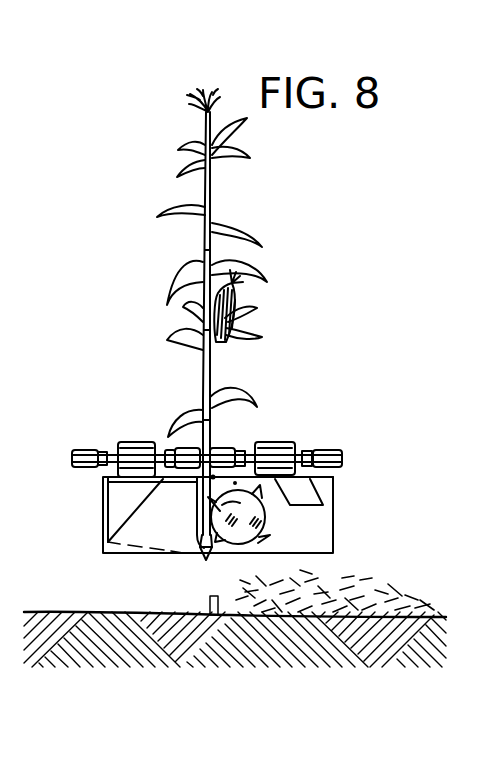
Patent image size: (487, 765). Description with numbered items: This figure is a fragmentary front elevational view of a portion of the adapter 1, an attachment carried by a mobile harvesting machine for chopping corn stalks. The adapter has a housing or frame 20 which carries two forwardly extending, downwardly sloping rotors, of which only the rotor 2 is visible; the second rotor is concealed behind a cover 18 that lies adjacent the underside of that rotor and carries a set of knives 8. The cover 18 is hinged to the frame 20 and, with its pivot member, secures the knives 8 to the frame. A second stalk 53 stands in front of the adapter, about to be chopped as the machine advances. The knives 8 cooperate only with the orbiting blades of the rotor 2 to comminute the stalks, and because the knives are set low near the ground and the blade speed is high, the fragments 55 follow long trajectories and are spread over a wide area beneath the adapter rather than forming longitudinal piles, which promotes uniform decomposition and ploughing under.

The adapter 1 is at (84, 512).
The rotor 2 is at (277, 525).
The knives 8 is at (206, 540).
The cover 18 is at (175, 533).
The housing or frame 20 is at (335, 490).
The second stalk 53 is at (212, 195).
The fragments 55 is at (338, 600).